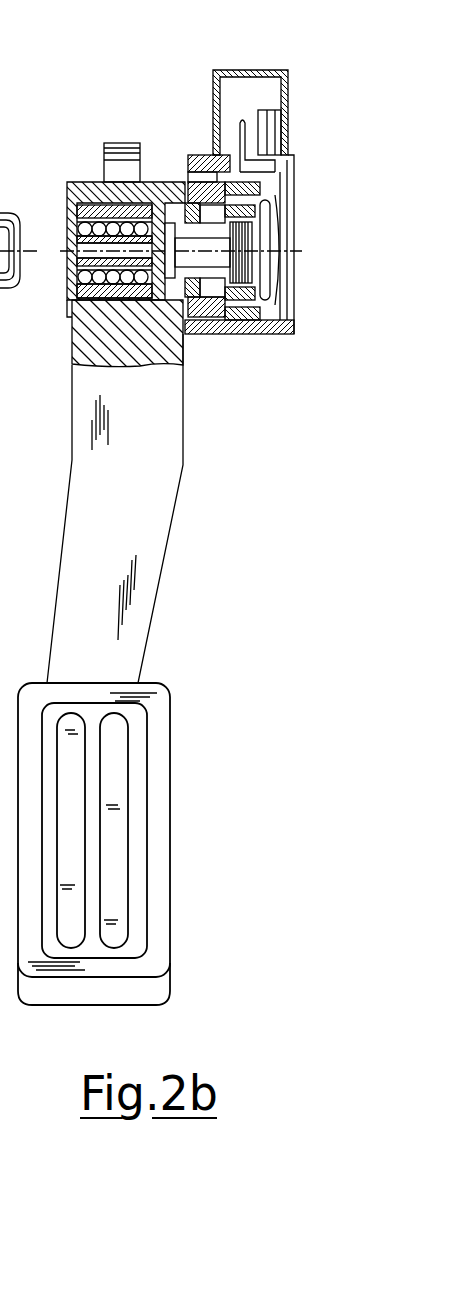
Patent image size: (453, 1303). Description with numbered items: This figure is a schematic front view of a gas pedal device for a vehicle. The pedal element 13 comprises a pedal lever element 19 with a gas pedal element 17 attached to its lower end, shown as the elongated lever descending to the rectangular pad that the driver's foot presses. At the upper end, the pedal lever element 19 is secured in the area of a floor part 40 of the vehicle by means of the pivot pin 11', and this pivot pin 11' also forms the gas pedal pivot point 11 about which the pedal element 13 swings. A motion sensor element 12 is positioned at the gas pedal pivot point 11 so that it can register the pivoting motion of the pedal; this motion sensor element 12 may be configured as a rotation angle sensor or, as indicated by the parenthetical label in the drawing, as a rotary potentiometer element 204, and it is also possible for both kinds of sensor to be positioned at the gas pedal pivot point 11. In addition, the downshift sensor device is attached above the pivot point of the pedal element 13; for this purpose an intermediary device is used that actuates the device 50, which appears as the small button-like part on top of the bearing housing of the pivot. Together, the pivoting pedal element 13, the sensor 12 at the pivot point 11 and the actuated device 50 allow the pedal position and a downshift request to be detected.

The rotary potentiometer element 204 is at (221, 175).
The motion sensor element 12 is at (203, 103).
The device 50 is at (127, 130).
The gas pedal pivot point 11 is at (101, 275).
The pivot pin 11' is at (101, 275).
The floor part 40 is at (177, 357).
The pedal element 13 is at (186, 478).
The pedal lever element 19 is at (165, 520).
The gas pedal element 17 is at (160, 758).